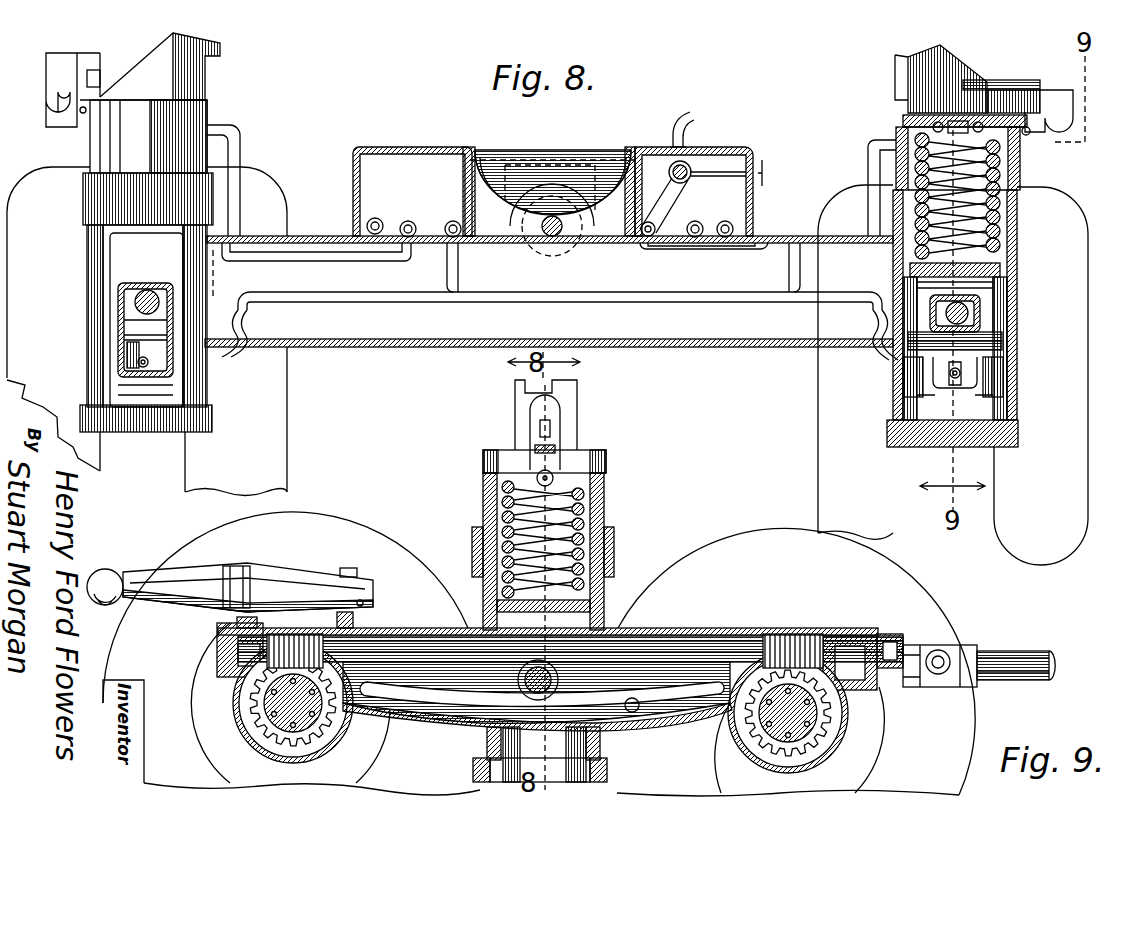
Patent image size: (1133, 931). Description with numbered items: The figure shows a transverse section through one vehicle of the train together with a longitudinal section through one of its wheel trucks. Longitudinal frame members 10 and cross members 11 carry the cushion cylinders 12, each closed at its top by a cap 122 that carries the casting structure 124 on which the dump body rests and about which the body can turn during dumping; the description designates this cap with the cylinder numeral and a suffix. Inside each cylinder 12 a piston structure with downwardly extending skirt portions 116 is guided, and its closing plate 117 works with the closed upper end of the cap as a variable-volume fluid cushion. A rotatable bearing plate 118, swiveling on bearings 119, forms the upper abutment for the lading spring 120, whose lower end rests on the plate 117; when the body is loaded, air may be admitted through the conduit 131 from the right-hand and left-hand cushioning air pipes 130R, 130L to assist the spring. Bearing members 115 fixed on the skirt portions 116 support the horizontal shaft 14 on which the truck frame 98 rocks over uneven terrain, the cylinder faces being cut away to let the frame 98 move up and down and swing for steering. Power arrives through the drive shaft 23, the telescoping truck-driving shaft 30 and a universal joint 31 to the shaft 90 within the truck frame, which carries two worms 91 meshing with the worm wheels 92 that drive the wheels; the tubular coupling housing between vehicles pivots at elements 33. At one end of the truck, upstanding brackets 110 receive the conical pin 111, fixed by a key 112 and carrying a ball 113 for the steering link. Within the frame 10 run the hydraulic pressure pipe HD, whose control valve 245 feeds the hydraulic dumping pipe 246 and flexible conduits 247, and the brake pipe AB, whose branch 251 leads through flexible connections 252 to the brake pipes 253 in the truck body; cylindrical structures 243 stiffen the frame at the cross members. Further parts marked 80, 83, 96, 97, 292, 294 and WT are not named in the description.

In FIG. 8, the longitudinal frame members 10 is at (320, 200).
In FIG. 8, the cross members 11 is at (748, 348).
In FIG. 8, the cushion cylinders 12 is at (92, 342).
In FIG. 8, the horizontal shaft 14 is at (1003, 346).
In FIG. 9, the horizontal shaft 14 is at (613, 639).
In FIG. 8, the drive shaft 23 is at (556, 238).
In FIG. 9, the telescoping truck-driving shafts 30 is at (1006, 651).
In FIG. 9, the universal joints 31 is at (940, 650).
In FIG. 8, the pivot elements 33 is at (590, 226).
In FIG. 8, the pipe 80 is at (377, 218).
In FIG. 8, the pipe 83 is at (735, 229).
In FIG. 8, the shaft 90 is at (135, 302).
In FIG. 9, the shaft 90 is at (690, 648).
In FIG. 9, the worms 91 is at (298, 634).
In FIG. 9, the worm wheels 92 is at (336, 722).
In FIG. 9, the gear housing 96 is at (206, 672).
In FIG. 9, the housing ring 97 is at (236, 716).
In FIG. 8, the truck frame 98 is at (170, 306).
In FIG. 9, the truck frame 98 is at (654, 628).
In FIG. 8, the upstanding brackets 110 is at (914, 297).
In FIG. 9, the upstanding brackets 110 is at (252, 566).
In FIG. 9, the conical pin 111 is at (286, 580).
In FIG. 9, the key 112 is at (370, 566).
In FIG. 9, the ball 113 is at (110, 569).
In FIG. 8, the bearing members 115 is at (893, 380).
In FIG. 8, the skirt portions 116 is at (1005, 322).
In FIG. 9, the skirt portions 116 is at (490, 742).
In FIG. 8, the closing plate 117 is at (1002, 277).
In FIG. 9, the closing plate 117 is at (478, 574).
In FIG. 8, the rotatable bearing plate 118 is at (900, 118).
In FIG. 8, the bearings 119 is at (940, 124).
In FIG. 8, the lading spring 120 is at (1000, 192).
In FIG. 9, the lading spring 120 is at (584, 527).
In FIG. 8, the cylinder 122 is at (1020, 172).
In FIG. 9, the cylinder 122 is at (604, 490).
In FIG. 8, the head members 124 is at (147, 68).
In FIG. 9, the head members 124 is at (578, 424).
In FIG. 8, the right-hand cushioning air pipe 130R is at (412, 221).
In FIG. 8, the left-hand cushioning air pipe 130L is at (705, 224).
In FIG. 8, the branch conduit 131 is at (238, 150).
In FIG. 8, the cylindrical structures 243 is at (580, 172).
In FIG. 8, the control valve 245 is at (690, 165).
In FIG. 8, the hydraulic dumping pipe 246 is at (672, 166).
In FIG. 8, the flexible conduits 247 is at (678, 112).
In FIG. 8, the branch 251 is at (458, 283).
In FIG. 8, the flexible connections 252 is at (246, 334).
In FIG. 8, the brake pipes 253 is at (175, 364).
In FIG. 9, the brake pipes 253 is at (664, 712).
In FIG. 8, the bowl wall 292 is at (627, 186).
In FIG. 8, the lever arm 294 is at (676, 206).
In FIG. 8, the brake pipe AB is at (452, 221).
In FIG. 8, the hydraulic pressure pipe HD is at (648, 246).
In FIG. 8, the wheel tire WT is at (822, 418).
In FIG. 9, the wheel tire WT is at (744, 528).